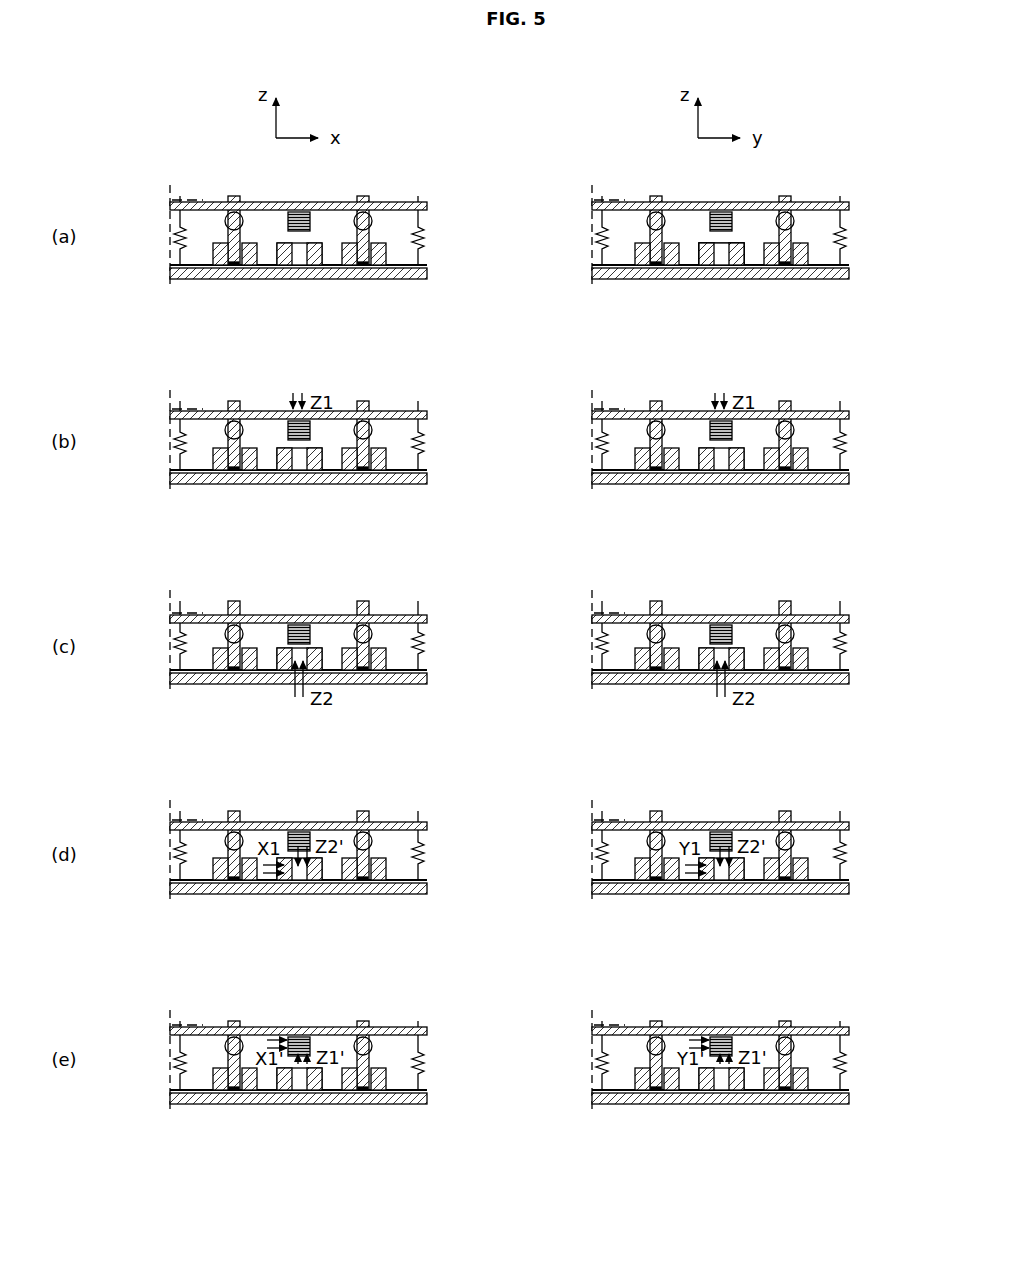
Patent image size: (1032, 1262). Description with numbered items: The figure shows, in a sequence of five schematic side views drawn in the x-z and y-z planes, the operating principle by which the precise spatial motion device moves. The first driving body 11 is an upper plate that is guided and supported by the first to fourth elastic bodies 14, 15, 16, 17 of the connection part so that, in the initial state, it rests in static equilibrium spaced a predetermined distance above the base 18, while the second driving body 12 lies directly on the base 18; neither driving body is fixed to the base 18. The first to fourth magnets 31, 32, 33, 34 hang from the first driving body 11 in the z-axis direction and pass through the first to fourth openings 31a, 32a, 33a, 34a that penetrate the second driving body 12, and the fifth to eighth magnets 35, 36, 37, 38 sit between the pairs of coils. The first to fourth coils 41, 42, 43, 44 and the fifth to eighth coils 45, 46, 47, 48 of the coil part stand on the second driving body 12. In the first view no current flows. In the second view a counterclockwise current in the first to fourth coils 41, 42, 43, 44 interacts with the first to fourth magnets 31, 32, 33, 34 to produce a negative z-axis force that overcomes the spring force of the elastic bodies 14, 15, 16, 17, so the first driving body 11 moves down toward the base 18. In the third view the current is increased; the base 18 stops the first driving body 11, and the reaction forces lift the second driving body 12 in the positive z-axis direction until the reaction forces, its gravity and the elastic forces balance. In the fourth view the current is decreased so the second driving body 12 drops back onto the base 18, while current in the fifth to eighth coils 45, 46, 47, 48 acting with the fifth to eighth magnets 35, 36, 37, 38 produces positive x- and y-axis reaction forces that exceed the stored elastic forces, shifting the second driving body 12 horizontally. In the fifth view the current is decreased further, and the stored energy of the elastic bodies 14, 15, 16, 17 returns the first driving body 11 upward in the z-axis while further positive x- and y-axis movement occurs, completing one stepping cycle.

The first driving body 11 is at (170, 202).
The second driving body 12 is at (170, 265).
The base 18 is at (427, 274).
The first elastic body 14 is at (139, 230).
The second elastic body 15 is at (458, 230).
The third elastic body 16 is at (178, 238).
The fourth elastic body 17 is at (421, 240).
The first magnet 31 is at (258, 211).
The second magnet 32 is at (387, 211).
The third magnet 33 is at (243, 232).
The fourth magnet 34 is at (372, 232).
The fifth magnet 35 is at (279, 263).
The sixth magnet 36 is at (297, 225).
The seventh magnet 37 is at (229, 216).
The eighth magnet 38 is at (358, 216).
The first opening 31a is at (237, 302).
The second opening 32a is at (373, 302).
The third opening 33a is at (236, 266).
The fourth opening 34a is at (364, 266).
The first coil 41 is at (197, 279).
The second coil 42 is at (399, 279).
The third coil 43 is at (214, 254).
The fourth coil 44 is at (385, 254).
The fifth coil 45 is at (320, 279).
The sixth coil 46 is at (320, 254).
The seventh coil 47 is at (742, 279).
The eighth coil 48 is at (742, 254).